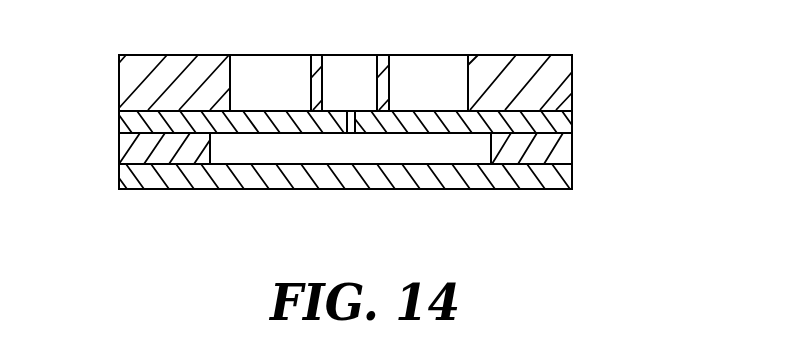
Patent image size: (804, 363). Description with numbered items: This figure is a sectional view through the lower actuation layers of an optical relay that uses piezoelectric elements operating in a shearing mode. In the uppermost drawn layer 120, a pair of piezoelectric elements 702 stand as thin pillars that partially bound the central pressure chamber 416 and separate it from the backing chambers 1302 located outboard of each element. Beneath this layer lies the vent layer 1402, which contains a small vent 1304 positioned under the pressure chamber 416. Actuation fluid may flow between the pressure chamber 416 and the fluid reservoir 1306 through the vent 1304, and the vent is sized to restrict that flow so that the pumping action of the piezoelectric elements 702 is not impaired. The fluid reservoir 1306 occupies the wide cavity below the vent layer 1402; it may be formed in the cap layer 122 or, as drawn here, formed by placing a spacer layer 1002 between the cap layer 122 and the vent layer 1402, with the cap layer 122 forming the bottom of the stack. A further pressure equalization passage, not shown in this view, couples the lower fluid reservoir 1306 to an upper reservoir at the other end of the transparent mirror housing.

The first substrate layer 120 is at (573, 70).
The cap layer 122 is at (573, 170).
The pressure chamber 416 is at (337, 72).
The piezoelectric elements 702 is at (407, 77).
The spacer layer 1002 is at (118, 143).
The backing chambers 1302 is at (454, 72).
The vent 1304 is at (351, 115).
The fluid reservoir 1306 is at (240, 150).
The vent layer 1402 is at (617, 107).